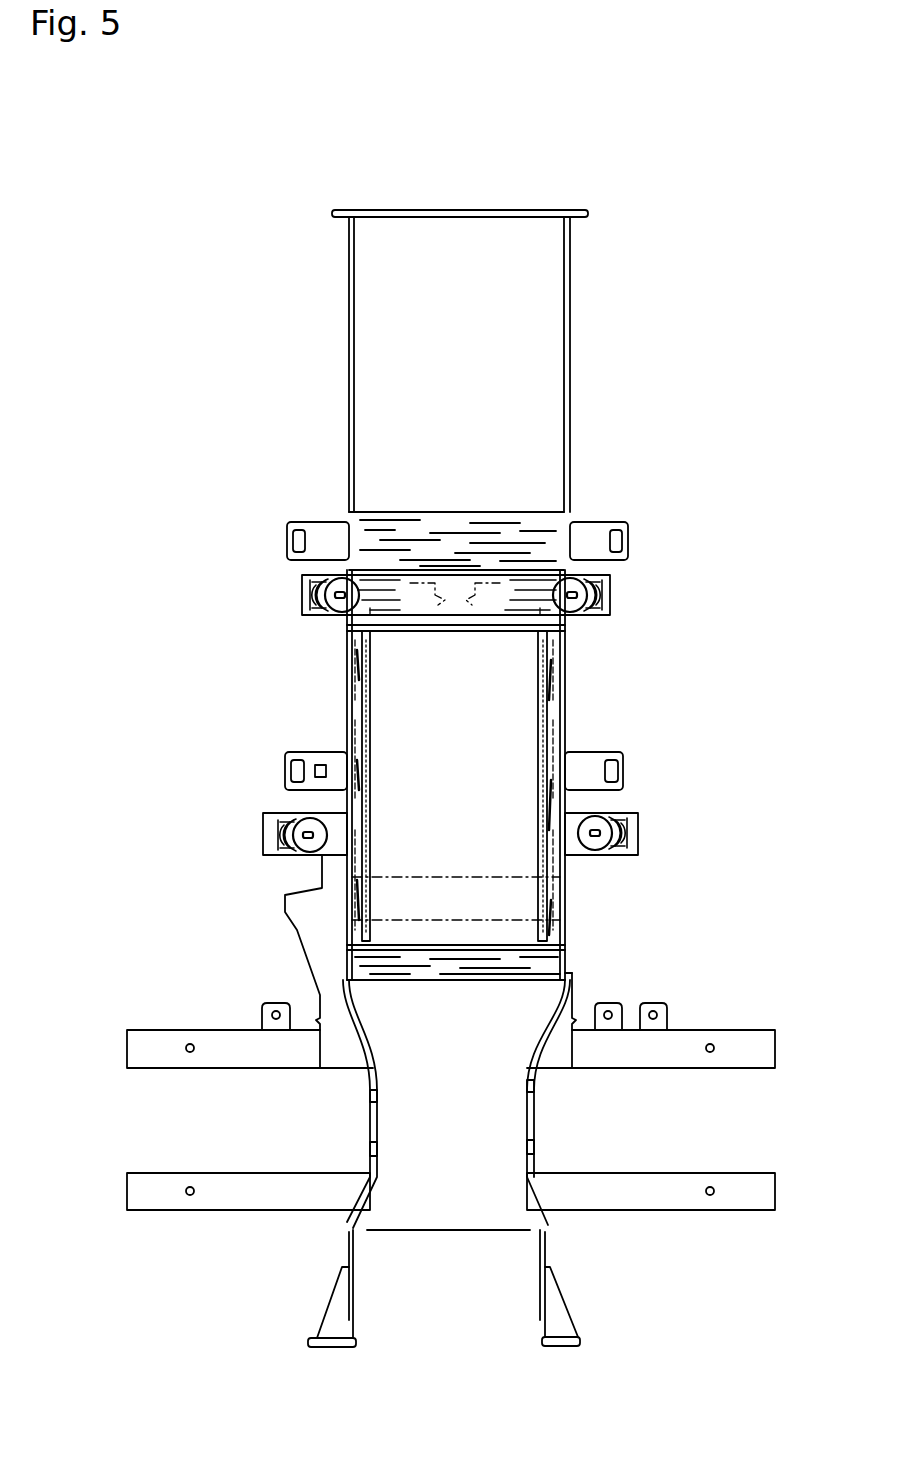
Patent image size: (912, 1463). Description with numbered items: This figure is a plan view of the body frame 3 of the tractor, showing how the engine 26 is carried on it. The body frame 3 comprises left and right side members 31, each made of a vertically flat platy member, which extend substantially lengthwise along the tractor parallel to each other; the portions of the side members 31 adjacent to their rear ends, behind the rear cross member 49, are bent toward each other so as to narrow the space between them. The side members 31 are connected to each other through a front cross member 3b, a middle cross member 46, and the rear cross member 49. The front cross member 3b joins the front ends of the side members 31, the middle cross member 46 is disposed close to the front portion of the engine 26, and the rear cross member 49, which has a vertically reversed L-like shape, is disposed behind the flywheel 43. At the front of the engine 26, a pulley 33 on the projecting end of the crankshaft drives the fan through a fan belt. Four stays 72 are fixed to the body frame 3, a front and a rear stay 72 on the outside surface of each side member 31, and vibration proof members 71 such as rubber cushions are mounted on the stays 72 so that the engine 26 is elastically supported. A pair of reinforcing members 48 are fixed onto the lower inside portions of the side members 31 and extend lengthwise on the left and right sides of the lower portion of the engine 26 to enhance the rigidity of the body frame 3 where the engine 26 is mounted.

The body frame 3 is at (554, 184).
The front cross member 3b is at (416, 211).
The side member 31 is at (348, 272).
The engine 26 is at (545, 735).
The middle cross member 46 is at (440, 478).
The pulley 33 is at (462, 578).
The vibration proof member 71 is at (302, 574).
The stay 72 is at (600, 574).
The reinforcing member 48 is at (361, 690).
The flywheel 43 is at (560, 930).
The rear cross member 49 is at (418, 965).